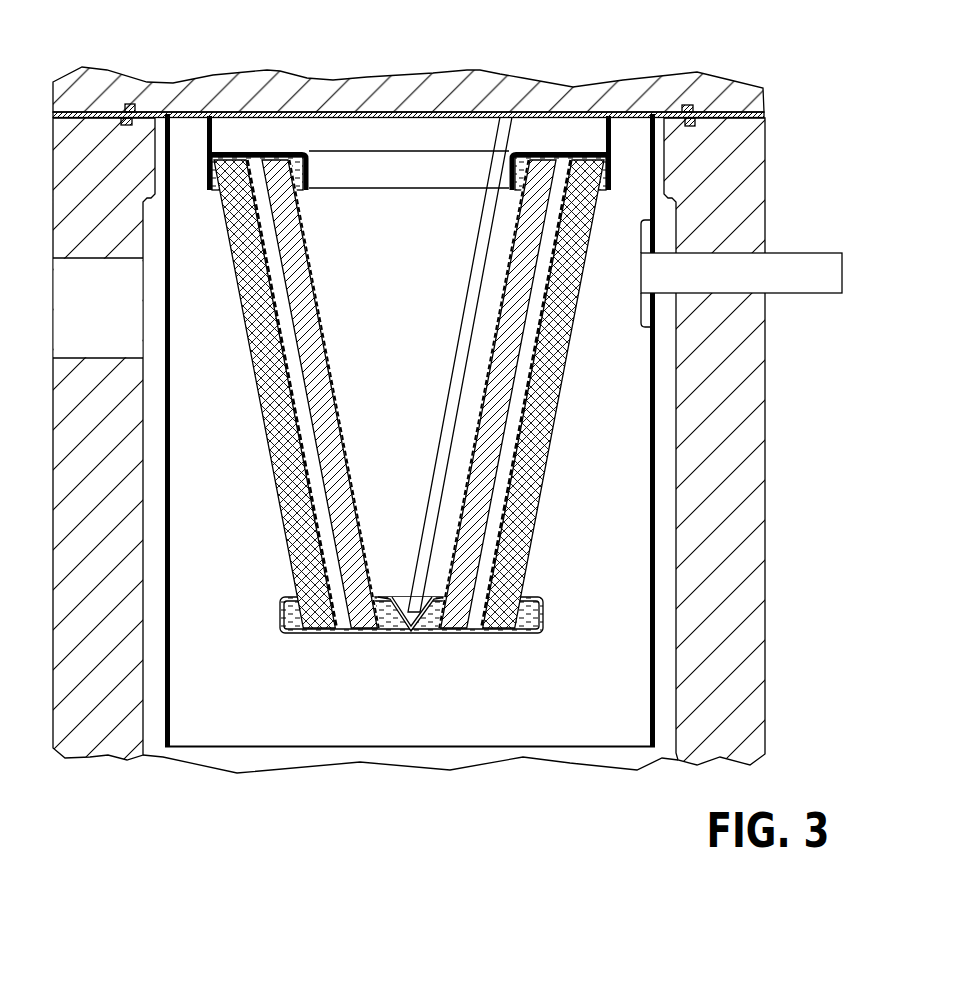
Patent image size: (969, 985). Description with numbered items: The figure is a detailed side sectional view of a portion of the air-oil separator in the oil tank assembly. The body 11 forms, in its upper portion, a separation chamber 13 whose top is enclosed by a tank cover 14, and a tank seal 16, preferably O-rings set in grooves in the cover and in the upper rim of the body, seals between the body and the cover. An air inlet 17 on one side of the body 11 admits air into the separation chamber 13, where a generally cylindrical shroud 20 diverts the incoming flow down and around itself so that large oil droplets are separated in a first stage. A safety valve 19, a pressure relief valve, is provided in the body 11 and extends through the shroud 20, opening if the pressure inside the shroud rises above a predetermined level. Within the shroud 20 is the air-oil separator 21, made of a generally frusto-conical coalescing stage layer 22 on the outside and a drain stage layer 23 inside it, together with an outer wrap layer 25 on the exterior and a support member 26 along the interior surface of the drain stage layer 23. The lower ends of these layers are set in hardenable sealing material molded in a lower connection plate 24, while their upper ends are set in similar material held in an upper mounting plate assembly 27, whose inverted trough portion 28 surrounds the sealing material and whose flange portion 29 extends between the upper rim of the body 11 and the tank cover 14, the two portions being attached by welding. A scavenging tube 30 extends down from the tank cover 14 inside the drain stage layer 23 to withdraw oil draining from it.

The body 11 is at (735, 537).
The separation chamber 13 is at (131, 493).
The tank cover 14 is at (733, 113).
The tank seal 16 is at (127, 104).
The air inlet 17 is at (97, 260).
The safety valve 19 is at (790, 270).
The shroud 20 is at (653, 608).
The air-oil separator 21 is at (514, 499).
The coalescing stage layer 22 is at (525, 478).
The drain stage layer 23 is at (477, 528).
The lower connection plate 24 is at (357, 545).
The outer wrap layer 25 is at (283, 533).
The support member 26 is at (395, 614).
The upper mounting plate assembly 27 is at (314, 140).
The inverted trough portion 28 is at (258, 153).
The flange portion 29 is at (175, 112).
The scavenging tube 30 is at (483, 231).